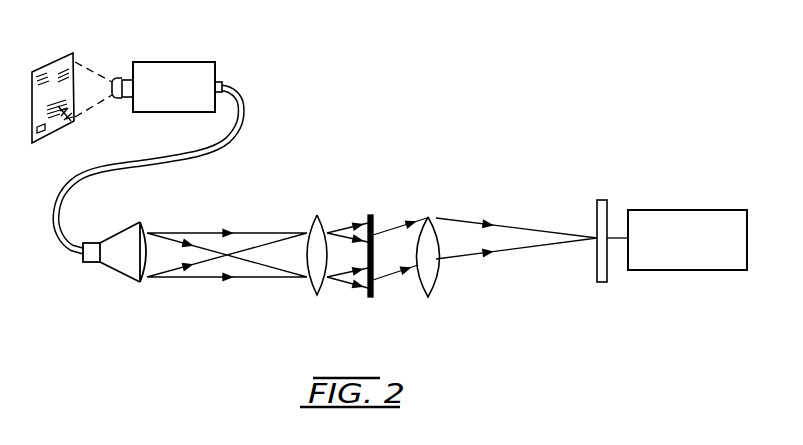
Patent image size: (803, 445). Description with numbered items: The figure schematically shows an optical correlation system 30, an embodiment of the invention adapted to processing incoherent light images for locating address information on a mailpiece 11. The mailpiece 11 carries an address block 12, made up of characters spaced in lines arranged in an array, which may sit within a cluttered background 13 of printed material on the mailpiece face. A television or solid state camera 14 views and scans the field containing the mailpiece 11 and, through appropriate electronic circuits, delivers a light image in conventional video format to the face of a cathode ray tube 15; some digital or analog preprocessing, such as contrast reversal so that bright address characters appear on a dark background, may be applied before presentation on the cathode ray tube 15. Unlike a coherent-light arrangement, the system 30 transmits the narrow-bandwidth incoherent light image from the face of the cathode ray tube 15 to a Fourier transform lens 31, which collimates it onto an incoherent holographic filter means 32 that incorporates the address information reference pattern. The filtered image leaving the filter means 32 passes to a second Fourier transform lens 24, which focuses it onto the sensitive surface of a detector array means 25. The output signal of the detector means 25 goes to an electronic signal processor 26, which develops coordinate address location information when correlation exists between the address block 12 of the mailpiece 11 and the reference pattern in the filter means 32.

The mailpiece 11 is at (46, 71).
The address block 12 is at (41, 133).
The cluttered background 13 is at (71, 121).
The camera 14 is at (182, 62).
The cathode ray tube 15 is at (132, 232).
The Fourier transform lens 24 is at (428, 225).
The detector array means 25 is at (605, 200).
The electronic signal processor 26 is at (685, 271).
The optical correlation system 30 is at (312, 152).
The Fourier transform lens 31 is at (317, 228).
The incoherent holographic filter means 32 is at (372, 220).